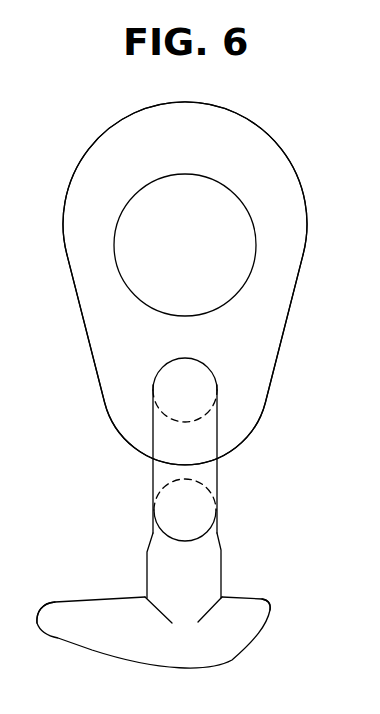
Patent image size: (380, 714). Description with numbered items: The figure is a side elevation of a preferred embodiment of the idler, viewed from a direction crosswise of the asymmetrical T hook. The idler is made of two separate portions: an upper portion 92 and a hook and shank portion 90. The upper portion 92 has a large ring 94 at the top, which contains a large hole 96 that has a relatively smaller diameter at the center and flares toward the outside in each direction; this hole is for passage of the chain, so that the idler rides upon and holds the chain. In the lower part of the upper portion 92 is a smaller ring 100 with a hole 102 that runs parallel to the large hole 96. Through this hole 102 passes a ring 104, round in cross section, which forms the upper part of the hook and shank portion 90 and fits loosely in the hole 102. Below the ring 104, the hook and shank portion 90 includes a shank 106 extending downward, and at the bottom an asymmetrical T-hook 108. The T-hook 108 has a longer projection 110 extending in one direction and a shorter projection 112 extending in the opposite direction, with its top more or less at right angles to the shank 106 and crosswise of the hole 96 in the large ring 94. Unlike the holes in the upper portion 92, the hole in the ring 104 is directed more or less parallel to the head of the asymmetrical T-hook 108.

The hook and shank portion 90 is at (220, 548).
The upper portion 92 is at (305, 236).
The large ring 94 is at (274, 140).
The large hole 96 is at (256, 233).
The smaller ring 100 is at (271, 381).
The hole 102 is at (218, 384).
The ring 104 is at (218, 498).
The shank 106 is at (222, 576).
The asymmetrical T-hook 108 is at (230, 662).
The longer projection 110 is at (68, 643).
The shorter projection 112 is at (266, 622).